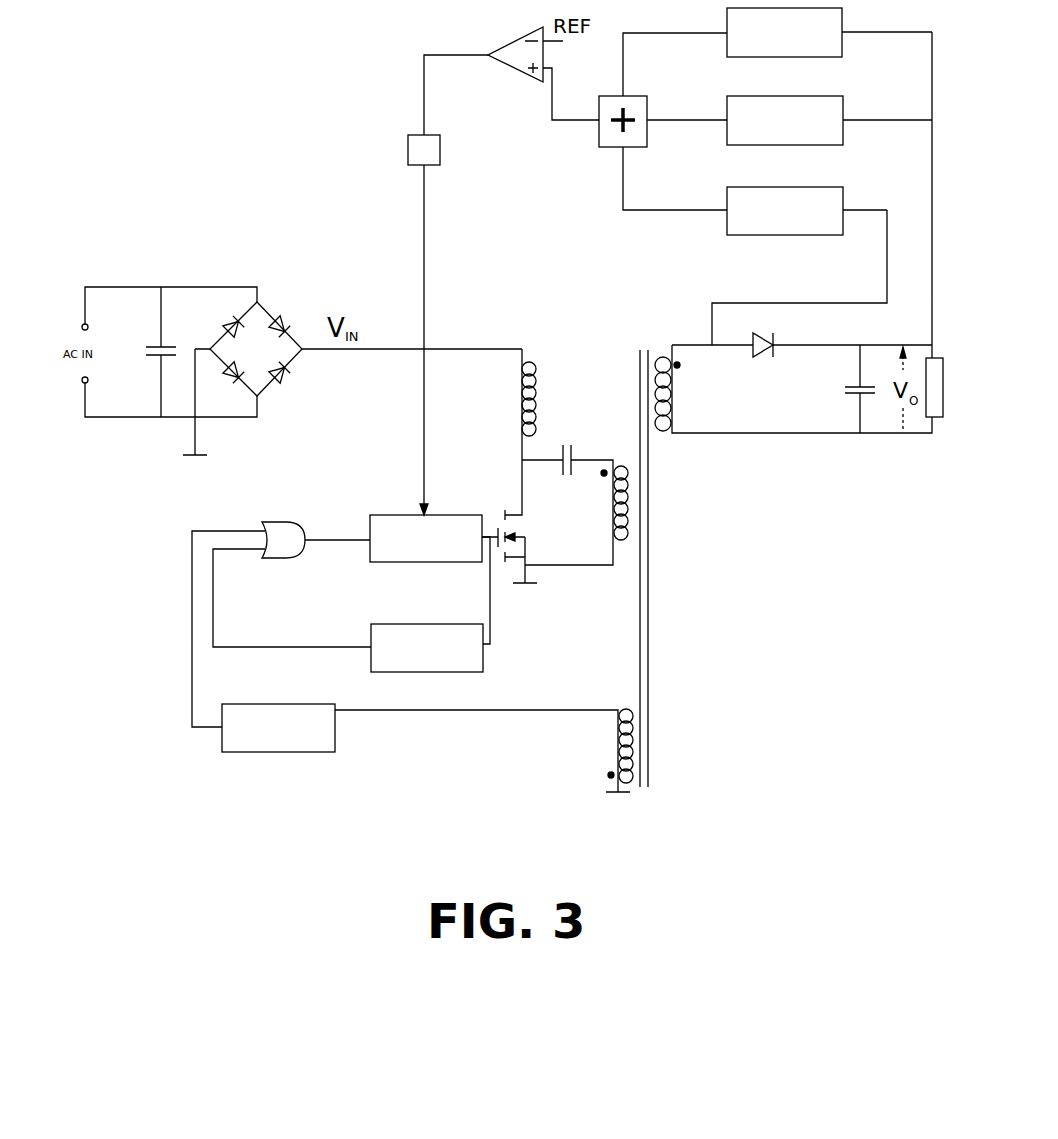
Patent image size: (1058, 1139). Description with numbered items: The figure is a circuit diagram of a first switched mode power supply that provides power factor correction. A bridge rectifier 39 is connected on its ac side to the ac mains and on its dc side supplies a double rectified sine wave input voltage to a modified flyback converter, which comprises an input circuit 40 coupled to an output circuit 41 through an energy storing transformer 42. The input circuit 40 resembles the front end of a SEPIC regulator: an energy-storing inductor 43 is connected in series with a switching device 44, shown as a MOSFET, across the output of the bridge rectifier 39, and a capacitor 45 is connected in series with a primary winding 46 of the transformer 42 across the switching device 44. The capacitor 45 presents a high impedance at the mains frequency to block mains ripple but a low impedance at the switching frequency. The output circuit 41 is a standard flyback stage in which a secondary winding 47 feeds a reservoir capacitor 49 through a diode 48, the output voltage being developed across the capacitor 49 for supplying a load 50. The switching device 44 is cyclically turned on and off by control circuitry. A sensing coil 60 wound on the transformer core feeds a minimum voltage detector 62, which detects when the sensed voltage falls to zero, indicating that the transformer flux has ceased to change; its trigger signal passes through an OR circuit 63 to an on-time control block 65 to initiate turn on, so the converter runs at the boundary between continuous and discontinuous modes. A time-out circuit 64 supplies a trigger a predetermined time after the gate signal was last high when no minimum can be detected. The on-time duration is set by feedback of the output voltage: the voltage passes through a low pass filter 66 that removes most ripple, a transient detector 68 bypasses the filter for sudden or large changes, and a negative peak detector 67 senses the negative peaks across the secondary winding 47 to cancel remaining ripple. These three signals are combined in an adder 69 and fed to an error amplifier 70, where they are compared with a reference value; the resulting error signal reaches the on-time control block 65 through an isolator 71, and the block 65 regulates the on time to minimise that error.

The bridge rectifier 39 is at (289, 300).
The input circuit 40 is at (487, 425).
The output circuit 41 is at (800, 405).
The energy storing transformer 42 is at (672, 582).
The energy-storing inductor 43 is at (540, 397).
The switching device 44 is at (498, 523).
The capacitor 45 is at (572, 447).
The primary winding 46 is at (612, 510).
The secondary winding 47 is at (673, 401).
The diode 48 is at (775, 342).
The reservoir capacitor 49 is at (856, 383).
The load 50 is at (943, 420).
The sensing coil 60 is at (635, 730).
The minimum voltage detector 62 is at (318, 754).
The OR circuit 63 is at (287, 553).
The time-out circuit 64 is at (420, 622).
The on-time control block 65 is at (400, 563).
The low pass filter 66 is at (826, 145).
The negative peak detector 67 is at (826, 236).
The transient detector 68 is at (824, 58).
The adder 69 is at (604, 150).
The error amplifier 70 is at (522, 77).
The isolator 71 is at (430, 167).